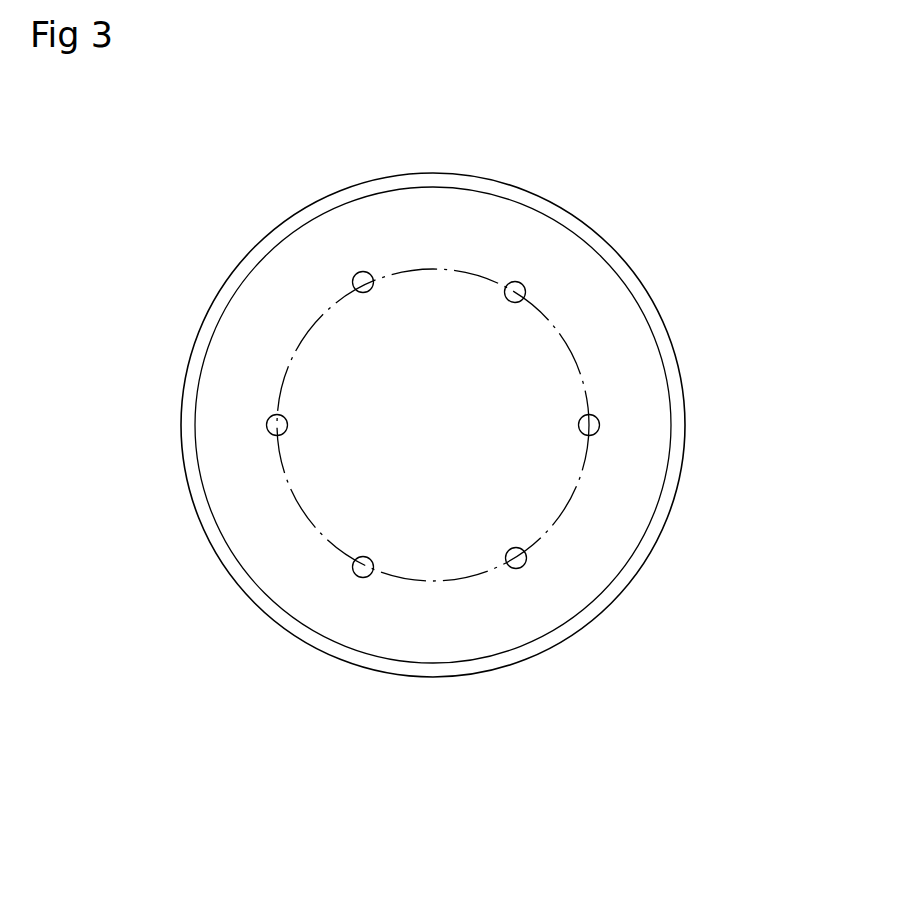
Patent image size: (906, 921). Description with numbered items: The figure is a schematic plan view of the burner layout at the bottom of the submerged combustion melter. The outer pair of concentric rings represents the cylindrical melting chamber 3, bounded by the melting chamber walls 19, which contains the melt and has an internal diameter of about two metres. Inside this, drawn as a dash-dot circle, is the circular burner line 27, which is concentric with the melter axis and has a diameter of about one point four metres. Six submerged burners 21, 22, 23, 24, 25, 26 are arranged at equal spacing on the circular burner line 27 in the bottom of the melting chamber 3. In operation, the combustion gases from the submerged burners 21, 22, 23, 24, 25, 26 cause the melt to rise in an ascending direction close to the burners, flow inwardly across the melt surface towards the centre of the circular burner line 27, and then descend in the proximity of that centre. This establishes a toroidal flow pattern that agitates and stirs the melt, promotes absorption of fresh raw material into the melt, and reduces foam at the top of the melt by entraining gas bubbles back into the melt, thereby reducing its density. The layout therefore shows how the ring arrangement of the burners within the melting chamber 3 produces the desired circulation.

The melting chamber 3 is at (168, 730).
The melting chamber walls 19 is at (663, 322).
The submerged burner 21 is at (266, 426).
The submerged burner 22 is at (356, 273).
The submerged burner 23 is at (522, 284).
The submerged burner 24 is at (600, 425).
The submerged burner 25 is at (526, 556).
The submerged burner 26 is at (356, 576).
The circular burner line 27 is at (580, 480).